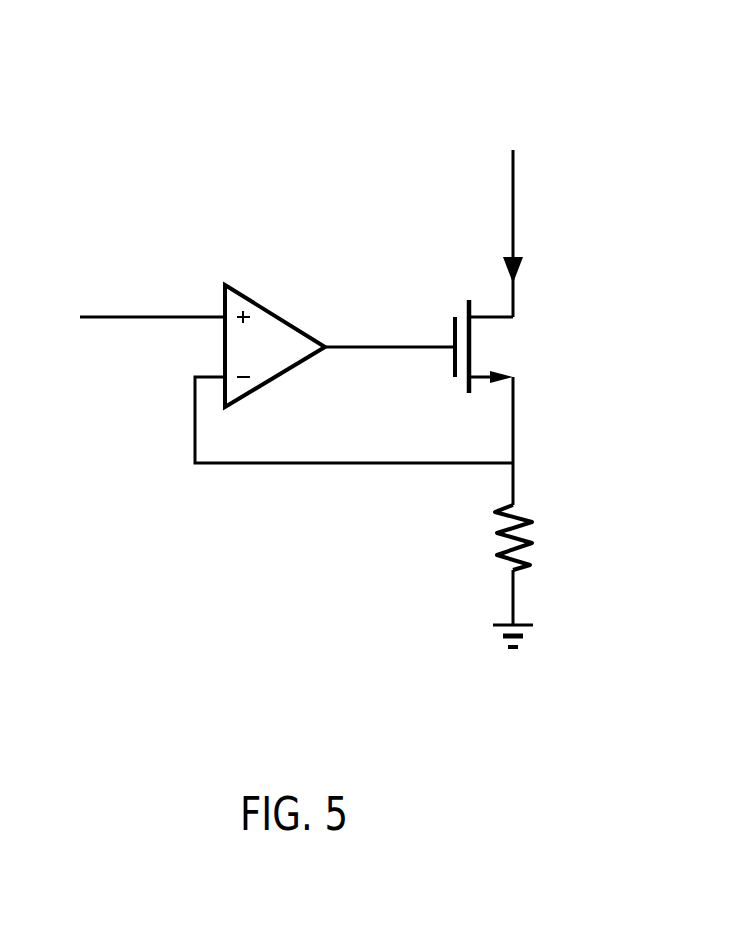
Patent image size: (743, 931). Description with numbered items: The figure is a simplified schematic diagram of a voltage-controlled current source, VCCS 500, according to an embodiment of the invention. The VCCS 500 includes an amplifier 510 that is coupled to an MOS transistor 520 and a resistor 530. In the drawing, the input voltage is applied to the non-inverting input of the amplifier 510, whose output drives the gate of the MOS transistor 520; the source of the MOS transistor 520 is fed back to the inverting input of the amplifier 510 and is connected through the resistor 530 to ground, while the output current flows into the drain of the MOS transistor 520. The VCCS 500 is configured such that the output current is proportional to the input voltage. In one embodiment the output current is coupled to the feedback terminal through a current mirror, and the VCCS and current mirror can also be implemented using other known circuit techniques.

The voltage-controlled current source 500 is at (608, 101).
The amplifier 510 is at (340, 339).
The MOS transistor 520 is at (521, 402).
The resistor 530 is at (543, 565).